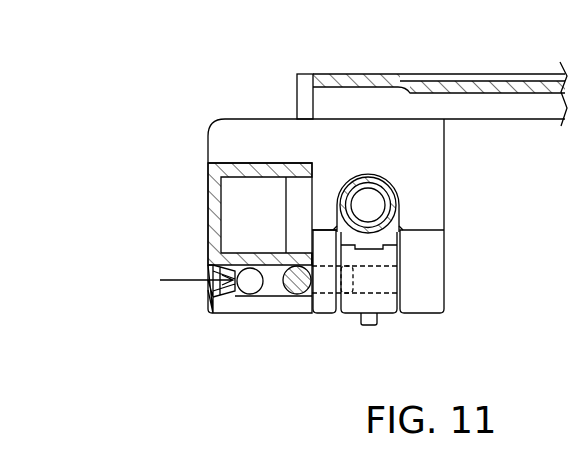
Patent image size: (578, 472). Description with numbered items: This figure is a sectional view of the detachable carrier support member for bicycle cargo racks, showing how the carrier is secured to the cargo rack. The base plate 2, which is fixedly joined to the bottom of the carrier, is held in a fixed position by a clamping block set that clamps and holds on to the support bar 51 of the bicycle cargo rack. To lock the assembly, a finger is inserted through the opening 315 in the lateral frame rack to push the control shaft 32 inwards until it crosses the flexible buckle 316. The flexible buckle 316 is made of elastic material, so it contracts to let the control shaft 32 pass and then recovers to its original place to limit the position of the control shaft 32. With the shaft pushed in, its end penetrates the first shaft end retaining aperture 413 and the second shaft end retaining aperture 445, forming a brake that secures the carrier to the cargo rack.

The base plate 2 is at (357, 74).
The support bar 51 is at (390, 181).
The opening 315 is at (215, 290).
The flexible buckle 316 is at (265, 296).
The control shaft 32 is at (291, 297).
The first shaft end retaining aperture 413 is at (322, 296).
The second shaft end retaining aperture 445 is at (367, 294).